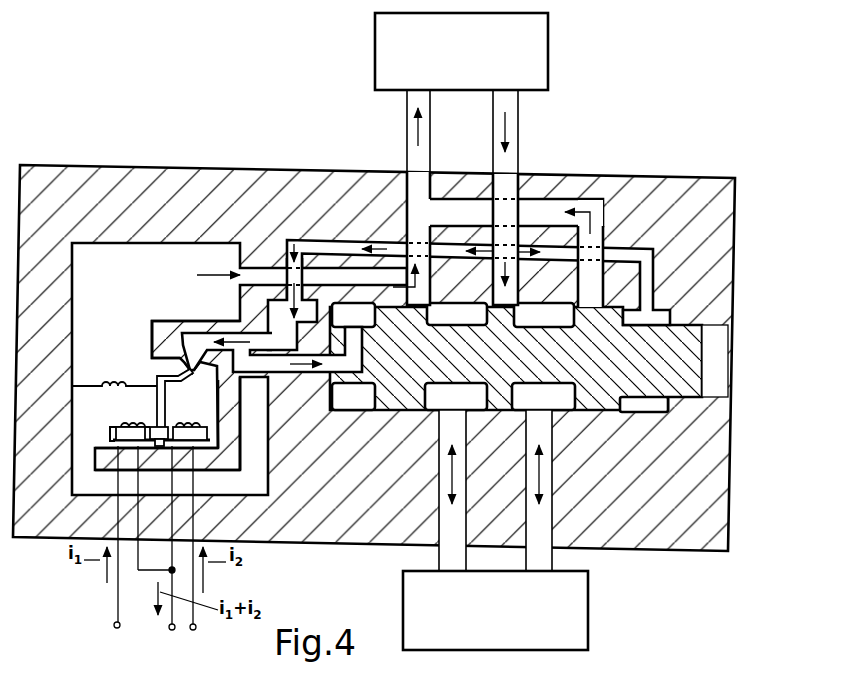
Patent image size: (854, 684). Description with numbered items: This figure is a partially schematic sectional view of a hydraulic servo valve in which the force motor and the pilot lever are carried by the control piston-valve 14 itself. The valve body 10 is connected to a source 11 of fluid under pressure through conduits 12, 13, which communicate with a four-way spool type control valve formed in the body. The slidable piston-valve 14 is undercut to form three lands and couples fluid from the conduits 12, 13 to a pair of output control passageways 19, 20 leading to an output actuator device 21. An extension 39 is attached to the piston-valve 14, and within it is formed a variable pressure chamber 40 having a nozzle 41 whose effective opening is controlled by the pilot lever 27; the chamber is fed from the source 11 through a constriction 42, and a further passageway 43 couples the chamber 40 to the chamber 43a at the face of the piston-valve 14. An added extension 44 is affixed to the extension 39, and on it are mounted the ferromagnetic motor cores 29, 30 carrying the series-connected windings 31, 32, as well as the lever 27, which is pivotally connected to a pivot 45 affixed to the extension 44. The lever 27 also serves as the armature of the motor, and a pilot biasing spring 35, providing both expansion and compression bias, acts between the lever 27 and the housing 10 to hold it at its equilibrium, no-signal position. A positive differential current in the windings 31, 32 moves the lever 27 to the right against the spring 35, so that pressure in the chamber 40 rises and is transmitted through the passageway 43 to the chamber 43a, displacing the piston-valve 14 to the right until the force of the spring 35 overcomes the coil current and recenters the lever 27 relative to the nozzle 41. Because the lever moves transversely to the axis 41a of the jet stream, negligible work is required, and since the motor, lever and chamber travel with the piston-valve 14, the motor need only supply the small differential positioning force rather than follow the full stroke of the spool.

The valve body 10 is at (716, 213).
The source of fluid under pressure 11 is at (540, 81).
The conduit 12 is at (407, 152).
The conduit 13 is at (513, 155).
The control piston-valve 14 is at (688, 362).
The output control passageway 19 is at (441, 558).
The output control passageway 20 is at (540, 560).
The output actuator device 21 is at (578, 587).
The pilot lever 27 is at (160, 400).
The ferromagnetic core 29 is at (110, 439).
The ferromagnetic core 30 is at (210, 443).
The winding 31 is at (126, 424).
The winding 32 is at (187, 425).
The pilot biasing spring 35 is at (107, 385).
The extension 39 is at (158, 328).
The variable pressure chamber 40 is at (191, 362).
The nozzle 41 is at (199, 374).
The axis of the jet stream 41a is at (192, 375).
The constriction 42 is at (268, 318).
The passageway 43 is at (360, 355).
The chamber 43a is at (347, 395).
The added extension 44 is at (231, 415).
The pivot 45 is at (167, 470).